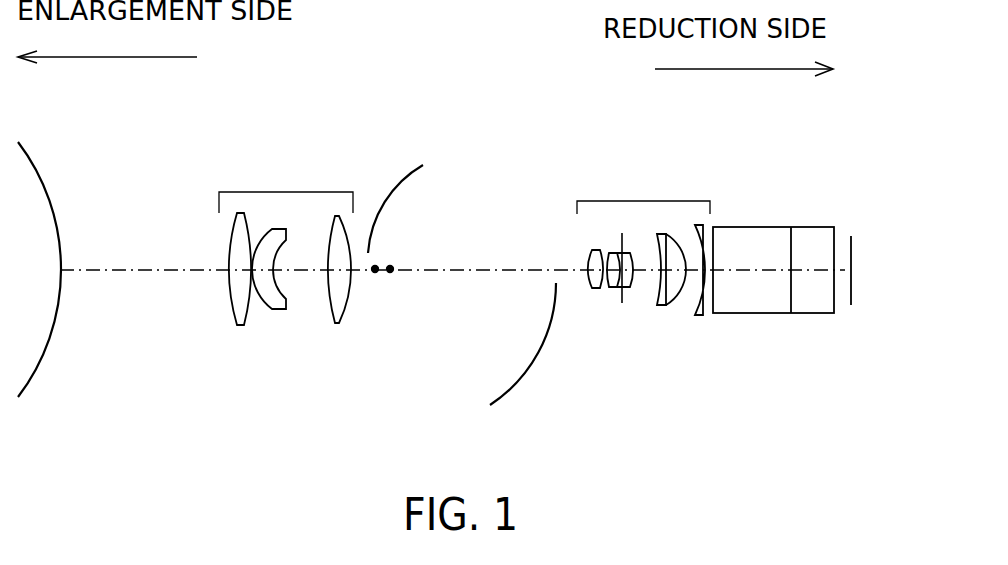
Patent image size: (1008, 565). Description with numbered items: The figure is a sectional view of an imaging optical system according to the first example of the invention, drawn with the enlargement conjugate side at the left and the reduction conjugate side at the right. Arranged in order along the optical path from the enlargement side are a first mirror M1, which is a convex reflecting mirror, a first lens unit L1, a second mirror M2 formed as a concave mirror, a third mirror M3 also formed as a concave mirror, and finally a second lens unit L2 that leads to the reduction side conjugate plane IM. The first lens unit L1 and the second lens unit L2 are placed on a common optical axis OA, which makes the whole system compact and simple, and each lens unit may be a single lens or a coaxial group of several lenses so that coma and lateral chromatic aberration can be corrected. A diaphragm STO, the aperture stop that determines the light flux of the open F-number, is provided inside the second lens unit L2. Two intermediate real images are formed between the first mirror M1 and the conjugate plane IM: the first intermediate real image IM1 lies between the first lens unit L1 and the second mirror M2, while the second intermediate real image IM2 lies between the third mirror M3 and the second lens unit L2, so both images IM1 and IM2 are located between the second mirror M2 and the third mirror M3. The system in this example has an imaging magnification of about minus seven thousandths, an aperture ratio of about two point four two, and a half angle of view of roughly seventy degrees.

The optical axis OA is at (80, 272).
The first mirror M1 is at (27, 380).
The second mirror M2 is at (509, 380).
The third mirror M3 is at (408, 180).
The first lens unit L1 is at (282, 190).
The second lens unit L2 is at (643, 200).
The first intermediate real image IM1 is at (392, 267).
The second intermediate real image IM2 is at (376, 271).
The diaphragm STO is at (622, 292).
The reduction side conjugate plane IM is at (855, 247).